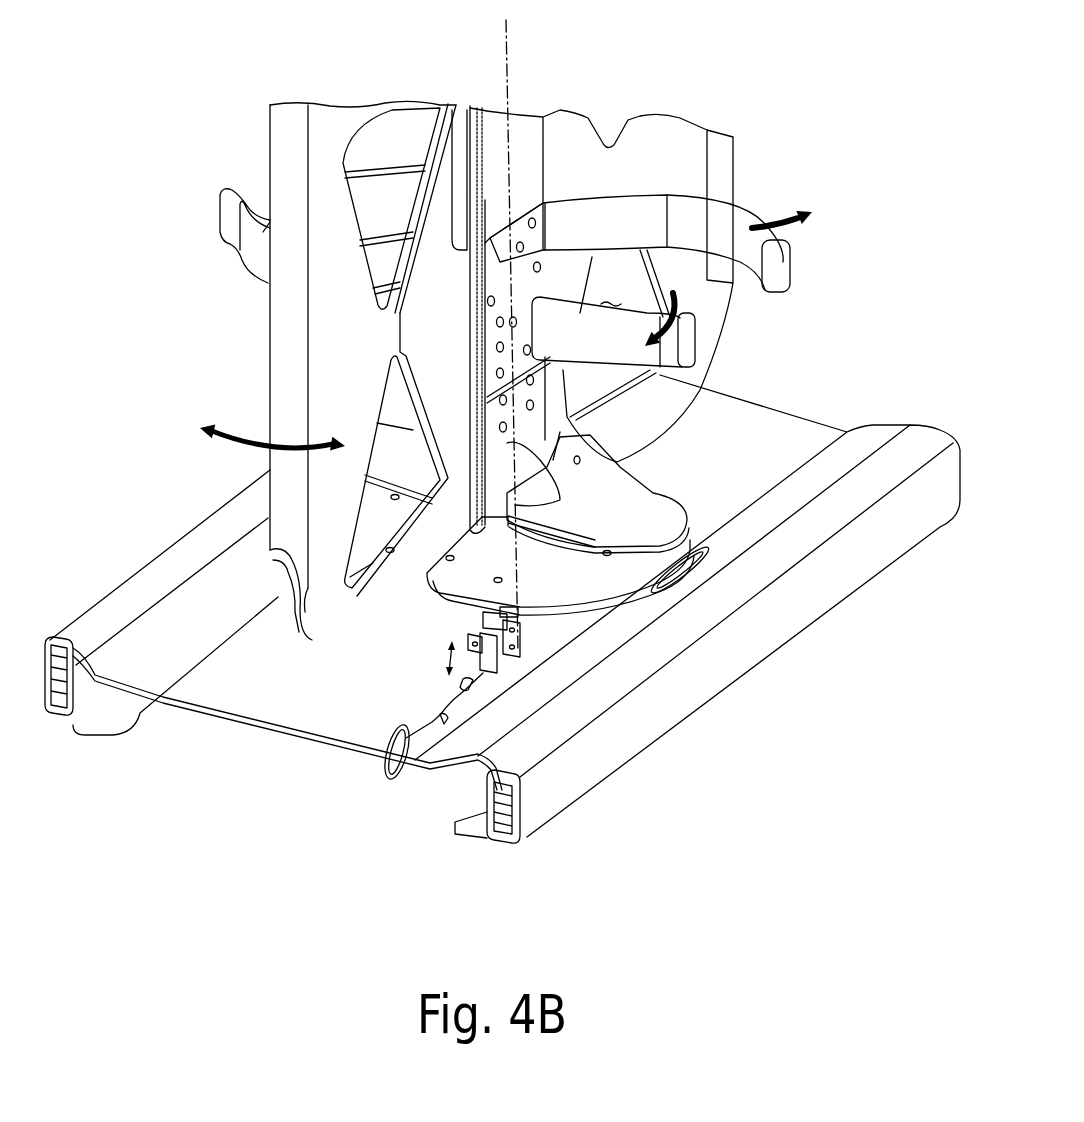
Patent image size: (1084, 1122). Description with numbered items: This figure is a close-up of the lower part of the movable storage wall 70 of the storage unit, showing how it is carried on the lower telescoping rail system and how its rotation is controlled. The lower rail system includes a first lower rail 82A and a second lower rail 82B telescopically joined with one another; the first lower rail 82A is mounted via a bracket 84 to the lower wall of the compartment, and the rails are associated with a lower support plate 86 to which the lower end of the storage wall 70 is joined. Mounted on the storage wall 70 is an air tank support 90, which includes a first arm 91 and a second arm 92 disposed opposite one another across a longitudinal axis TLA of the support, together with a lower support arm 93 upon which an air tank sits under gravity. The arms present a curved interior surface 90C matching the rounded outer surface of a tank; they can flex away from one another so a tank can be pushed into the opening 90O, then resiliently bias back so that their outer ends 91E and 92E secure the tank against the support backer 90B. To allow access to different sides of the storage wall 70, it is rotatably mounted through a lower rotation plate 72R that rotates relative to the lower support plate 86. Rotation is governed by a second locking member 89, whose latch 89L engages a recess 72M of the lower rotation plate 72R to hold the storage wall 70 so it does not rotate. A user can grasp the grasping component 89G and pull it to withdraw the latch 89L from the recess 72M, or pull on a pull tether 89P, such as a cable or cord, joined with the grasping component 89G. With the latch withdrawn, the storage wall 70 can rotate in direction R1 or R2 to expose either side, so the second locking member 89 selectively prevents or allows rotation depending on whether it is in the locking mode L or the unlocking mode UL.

The storage wall 70 is at (264, 366).
The rotation direction R1 is at (255, 443).
The rotation direction R2 is at (339, 457).
The longitudinal axis TLA is at (510, 83).
The support backer 90B is at (497, 133).
The air tank support 90 is at (780, 348).
The opening 90O is at (614, 292).
The curved interior surface 90C is at (737, 218).
The first arm 91 is at (783, 268).
The outer end 91E is at (790, 250).
The second arm 92 is at (687, 345).
The outer end 92E is at (690, 333).
The lower support arm 93 is at (668, 520).
The lower rotation plate 72R is at (553, 585).
The recess 72M is at (540, 637).
The second locking member 89 is at (483, 667).
The grasping component 89G is at (468, 640).
The latch 89L is at (507, 625).
The pull tether 89P is at (390, 775).
The locking mode L is at (446, 649).
The unlocking mode UL is at (437, 681).
The lower support plate 86 is at (330, 722).
The first lower rail 82A is at (497, 843).
The second lower rail 82B is at (510, 833).
The bracket 84 is at (467, 838).